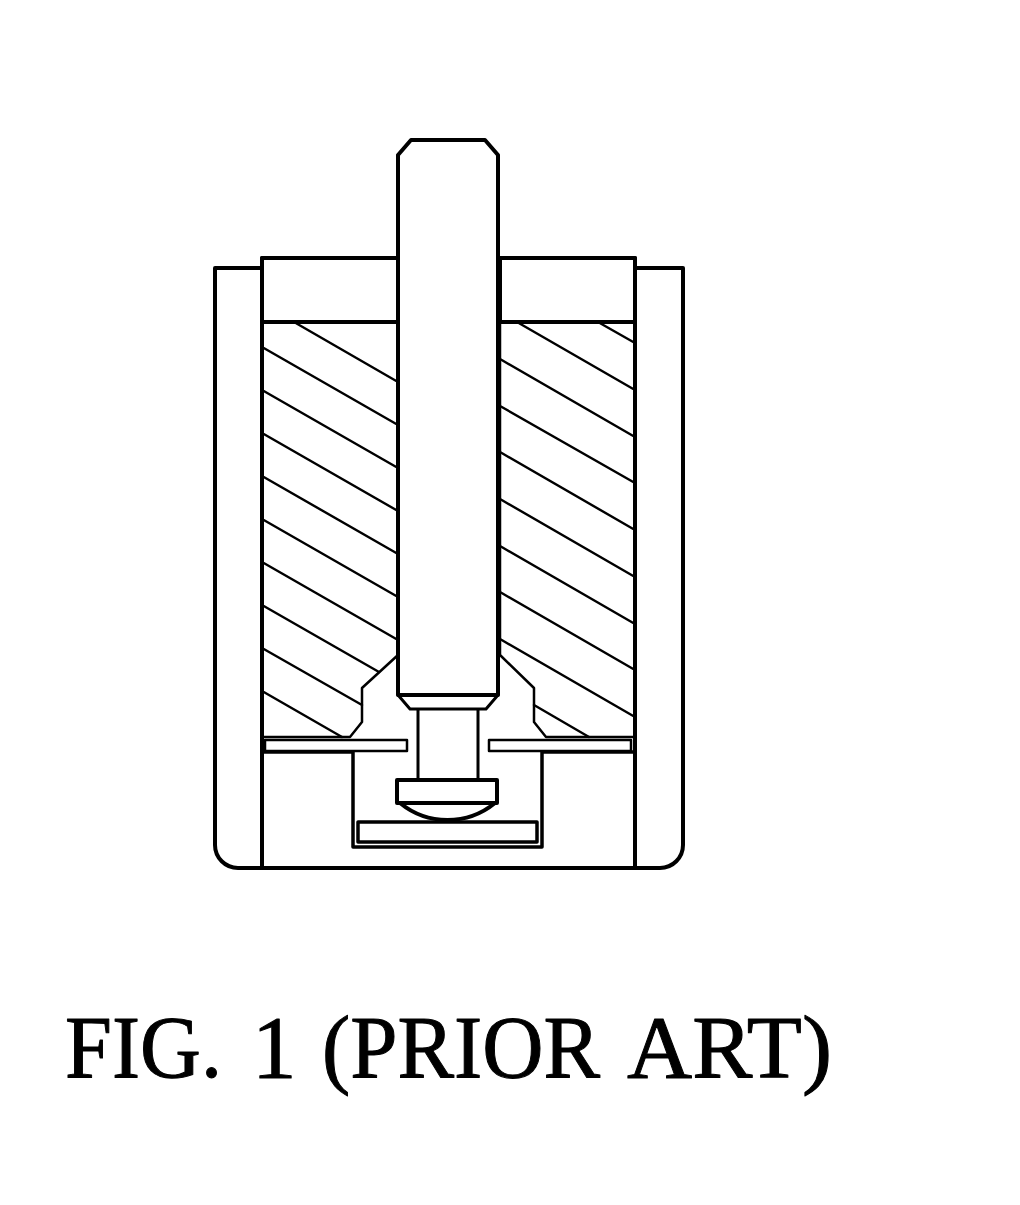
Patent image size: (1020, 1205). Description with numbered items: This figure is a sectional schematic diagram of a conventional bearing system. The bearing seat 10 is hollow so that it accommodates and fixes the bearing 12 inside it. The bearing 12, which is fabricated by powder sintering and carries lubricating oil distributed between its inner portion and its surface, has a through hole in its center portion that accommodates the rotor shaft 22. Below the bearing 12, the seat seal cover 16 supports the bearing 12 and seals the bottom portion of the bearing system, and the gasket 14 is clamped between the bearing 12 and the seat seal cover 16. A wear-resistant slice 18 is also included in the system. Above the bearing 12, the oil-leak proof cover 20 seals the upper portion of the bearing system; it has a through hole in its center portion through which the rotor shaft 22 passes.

The bearing seat 10 is at (232, 400).
The bearing 12 is at (300, 530).
The gasket 14 is at (613, 747).
The seat seal cover 16 is at (313, 848).
The wear-resistant slice 18 is at (490, 831).
The oil-leak proof cover 20 is at (345, 277).
The rotor shaft 22 is at (468, 183).